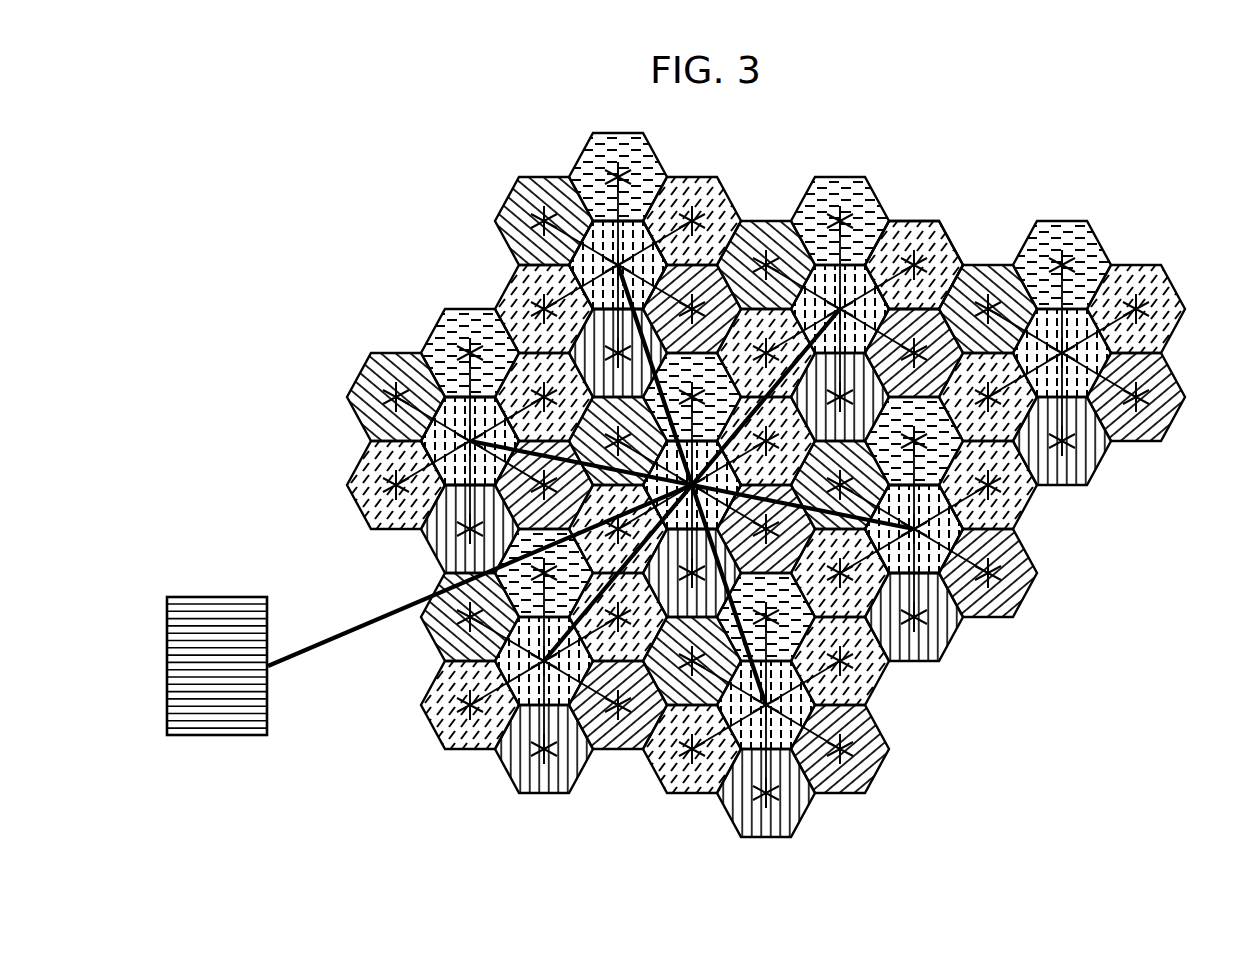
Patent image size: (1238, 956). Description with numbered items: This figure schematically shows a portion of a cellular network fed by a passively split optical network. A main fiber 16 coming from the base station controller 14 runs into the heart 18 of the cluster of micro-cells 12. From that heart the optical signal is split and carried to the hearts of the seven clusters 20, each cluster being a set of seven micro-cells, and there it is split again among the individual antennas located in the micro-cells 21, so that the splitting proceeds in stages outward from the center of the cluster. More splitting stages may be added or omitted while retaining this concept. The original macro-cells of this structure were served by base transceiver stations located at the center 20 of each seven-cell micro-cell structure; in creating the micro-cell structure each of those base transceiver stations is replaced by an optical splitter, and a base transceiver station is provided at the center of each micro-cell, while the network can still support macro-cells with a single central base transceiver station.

The cluster of micro-cells 12 is at (755, 485).
The base station controller 14 is at (213, 736).
The main fiber 16 is at (357, 631).
The heart of the cluster 18 is at (739, 536).
The hearts of the seven clusters 20 is at (618, 265).
The micro-cell 21 is at (937, 218).